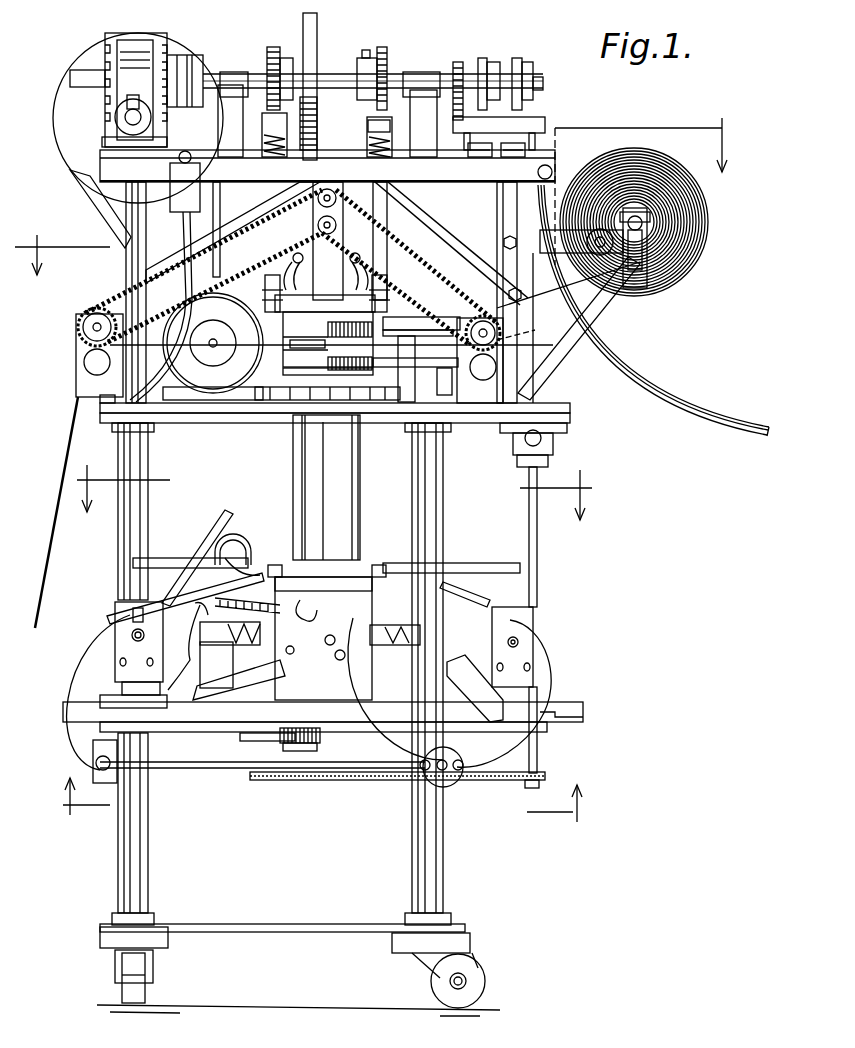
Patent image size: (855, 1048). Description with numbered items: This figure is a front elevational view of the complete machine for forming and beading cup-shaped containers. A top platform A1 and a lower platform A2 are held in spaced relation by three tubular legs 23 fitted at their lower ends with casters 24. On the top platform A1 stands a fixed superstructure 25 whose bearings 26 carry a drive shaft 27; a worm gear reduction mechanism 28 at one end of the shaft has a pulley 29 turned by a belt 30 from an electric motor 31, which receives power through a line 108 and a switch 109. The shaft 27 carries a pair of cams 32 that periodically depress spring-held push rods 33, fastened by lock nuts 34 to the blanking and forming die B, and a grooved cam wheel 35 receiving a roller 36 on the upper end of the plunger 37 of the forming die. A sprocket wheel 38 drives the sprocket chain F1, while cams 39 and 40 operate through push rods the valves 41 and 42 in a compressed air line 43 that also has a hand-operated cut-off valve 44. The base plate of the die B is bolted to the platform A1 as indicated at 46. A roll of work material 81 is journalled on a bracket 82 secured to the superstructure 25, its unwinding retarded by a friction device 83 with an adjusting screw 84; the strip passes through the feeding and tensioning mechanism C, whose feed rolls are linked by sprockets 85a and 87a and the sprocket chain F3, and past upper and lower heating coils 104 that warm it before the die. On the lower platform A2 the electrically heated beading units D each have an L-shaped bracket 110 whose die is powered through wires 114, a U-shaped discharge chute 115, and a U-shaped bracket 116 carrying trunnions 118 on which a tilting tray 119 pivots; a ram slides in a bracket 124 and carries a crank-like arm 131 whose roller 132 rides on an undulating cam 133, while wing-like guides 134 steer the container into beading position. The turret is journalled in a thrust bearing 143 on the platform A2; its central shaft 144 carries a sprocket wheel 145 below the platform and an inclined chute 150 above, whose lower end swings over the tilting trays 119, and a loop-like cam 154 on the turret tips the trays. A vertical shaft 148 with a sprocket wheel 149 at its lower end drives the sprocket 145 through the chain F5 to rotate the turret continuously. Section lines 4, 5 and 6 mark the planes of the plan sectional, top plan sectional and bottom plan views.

The tubular legs 23 is at (150, 856).
The casters 24 is at (152, 965).
The fixed superstructure 25 is at (515, 199).
The bearings 26 is at (225, 118).
The drive shaft 27 is at (328, 72).
The worm gear reduction mechanism 28 is at (145, 42).
The pulley 29 is at (70, 140).
The belt 30 is at (95, 206).
The electric motor 31 is at (212, 395).
The cams 32 is at (268, 60).
The spring-held push rods 33 is at (264, 188).
The lock nuts 34 is at (286, 288).
The grooved cam wheel 35 is at (318, 28).
The roller 36 is at (317, 118).
The plunger 37 is at (372, 145).
The sprocket wheel 38 is at (455, 65).
The cam 39 is at (483, 60).
The cam 40 is at (518, 62).
The valve 41 is at (480, 157).
The valve 42 is at (513, 157).
The compressed air line 43 is at (615, 345).
The hand-operated cut-off valve 44 is at (553, 168).
The bolts 46 is at (272, 372).
The roll of work material 81 is at (712, 208).
The bracket 82 is at (548, 372).
The friction device 83 is at (645, 250).
The adjusting screw 84 is at (645, 225).
The sprocket 85a is at (548, 332).
The sprocket 87a is at (100, 313).
The heating coils 104 is at (358, 408).
The line 108 is at (186, 240).
The switch 109 is at (200, 178).
The L-shaped bracket 110 is at (305, 690).
The wires 114 is at (80, 648).
The U-shaped discharge chute 115 is at (190, 718).
The U-shaped bracket 116 is at (520, 580).
The trunnions 118 is at (334, 557).
The tilting tray 119 is at (158, 545).
The bracket 124 is at (228, 662).
The crank-like arm 131 is at (304, 650).
The roller 132 is at (272, 640).
The cam 133 is at (293, 638).
The wing-like guides 134 is at (135, 700).
The thrust bearing 143 is at (298, 735).
The shaft 144 is at (345, 560).
The sprocket wheel 145 is at (300, 785).
The vertical shaft 148 is at (540, 568).
The sprocket wheel 149 is at (547, 776).
The inclined chute 150 is at (343, 481).
The loop-like cam 154 is at (246, 552).
The line 4— 4 is at (377, 195).
The line 5— 5 is at (344, 481).
The line 6— 6 is at (325, 802).
The top platform A1 is at (560, 406).
The lower platform A2 is at (226, 746).
The blanking and forming die B is at (352, 410).
The feeding and tensioning mechanism C is at (72, 331).
The beading units D is at (540, 625).
The sprocket chain F1 is at (462, 63).
The sprocket chain F3 is at (420, 255).
The sprocket chain F5 is at (505, 785).